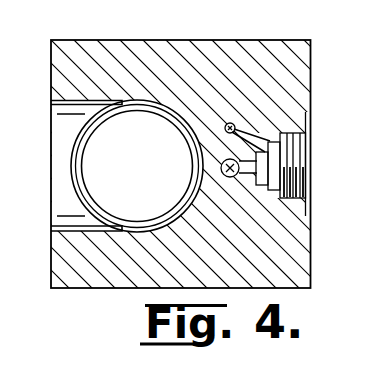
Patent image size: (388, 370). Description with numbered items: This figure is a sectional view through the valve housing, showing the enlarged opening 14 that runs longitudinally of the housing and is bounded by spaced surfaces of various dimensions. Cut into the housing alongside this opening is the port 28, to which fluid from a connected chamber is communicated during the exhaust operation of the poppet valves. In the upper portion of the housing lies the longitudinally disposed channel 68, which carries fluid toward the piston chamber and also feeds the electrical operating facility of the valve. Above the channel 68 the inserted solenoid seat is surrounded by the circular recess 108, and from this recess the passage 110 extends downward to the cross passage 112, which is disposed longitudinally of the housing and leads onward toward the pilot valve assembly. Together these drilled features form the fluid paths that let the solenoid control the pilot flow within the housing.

The enlarged opening 14 is at (139, 106).
The port 28 is at (58, 155).
The channel 68 is at (221, 170).
The circular recess 108 is at (272, 158).
The passage 110 is at (257, 134).
The cross passage 112 is at (234, 124).